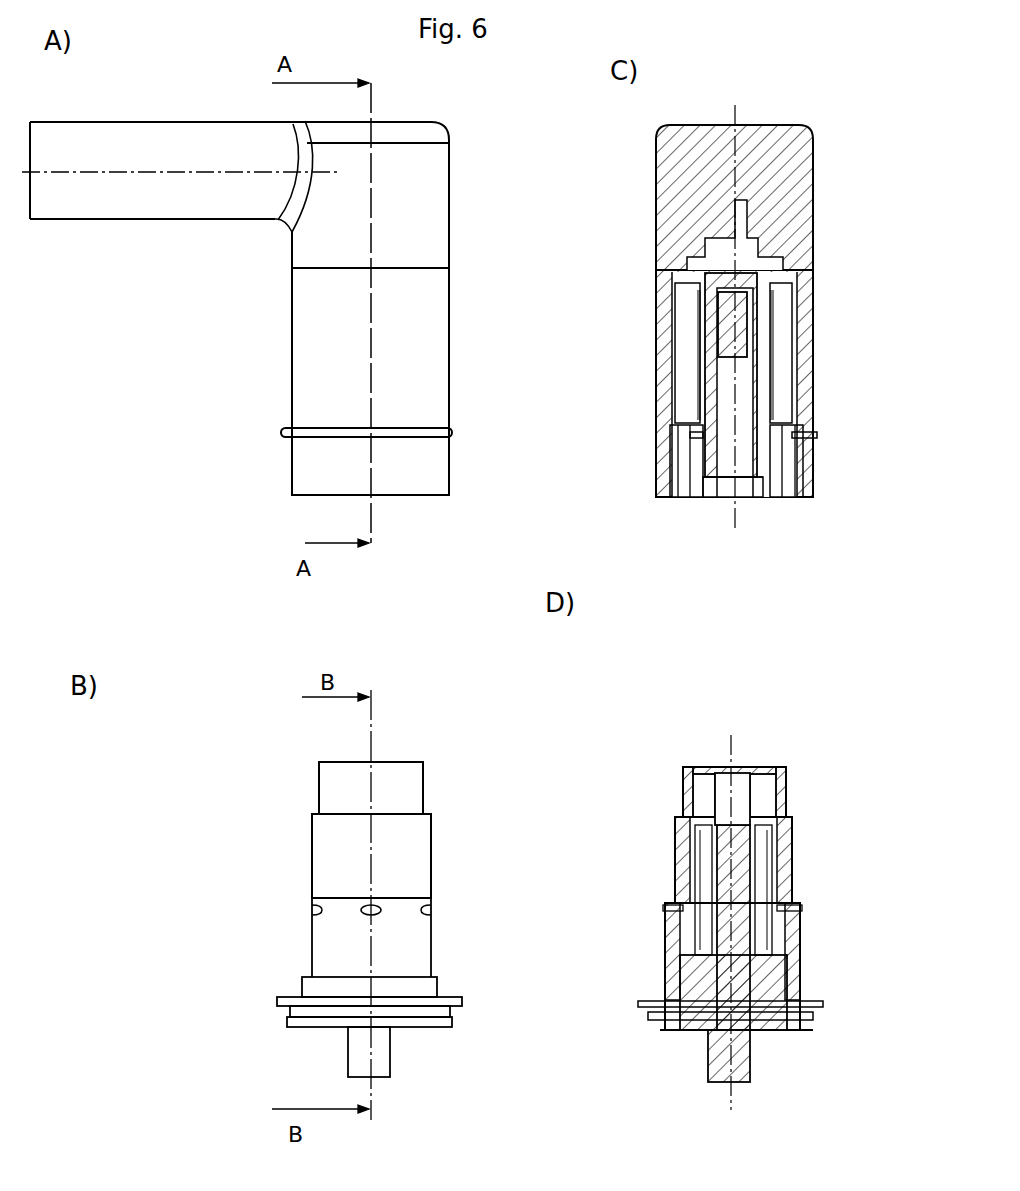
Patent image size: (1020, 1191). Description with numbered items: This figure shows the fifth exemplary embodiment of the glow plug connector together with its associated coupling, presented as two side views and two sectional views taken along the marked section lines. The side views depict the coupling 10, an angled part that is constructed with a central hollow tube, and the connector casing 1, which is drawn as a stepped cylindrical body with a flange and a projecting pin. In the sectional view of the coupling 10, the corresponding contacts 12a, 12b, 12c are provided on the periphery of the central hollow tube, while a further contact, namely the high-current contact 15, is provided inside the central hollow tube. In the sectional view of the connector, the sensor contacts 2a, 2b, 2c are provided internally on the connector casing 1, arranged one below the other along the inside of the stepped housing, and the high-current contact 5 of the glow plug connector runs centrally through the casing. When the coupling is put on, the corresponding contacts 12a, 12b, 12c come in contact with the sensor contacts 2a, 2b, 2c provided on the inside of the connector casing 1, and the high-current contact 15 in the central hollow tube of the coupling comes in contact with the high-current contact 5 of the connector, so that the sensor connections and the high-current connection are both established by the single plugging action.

The connector casing 1 is at (652, 1027).
The sensor contact 2a is at (688, 792).
The sensor contact 2b is at (680, 845).
The sensor contact 2c is at (680, 905).
The high-current contact 5 is at (743, 782).
The coupling 10 is at (717, 478).
The corresponding contact 12a is at (775, 306).
The corresponding contact 12b is at (700, 380).
The corresponding contact 12c is at (767, 442).
The high-current contact 15 is at (705, 315).